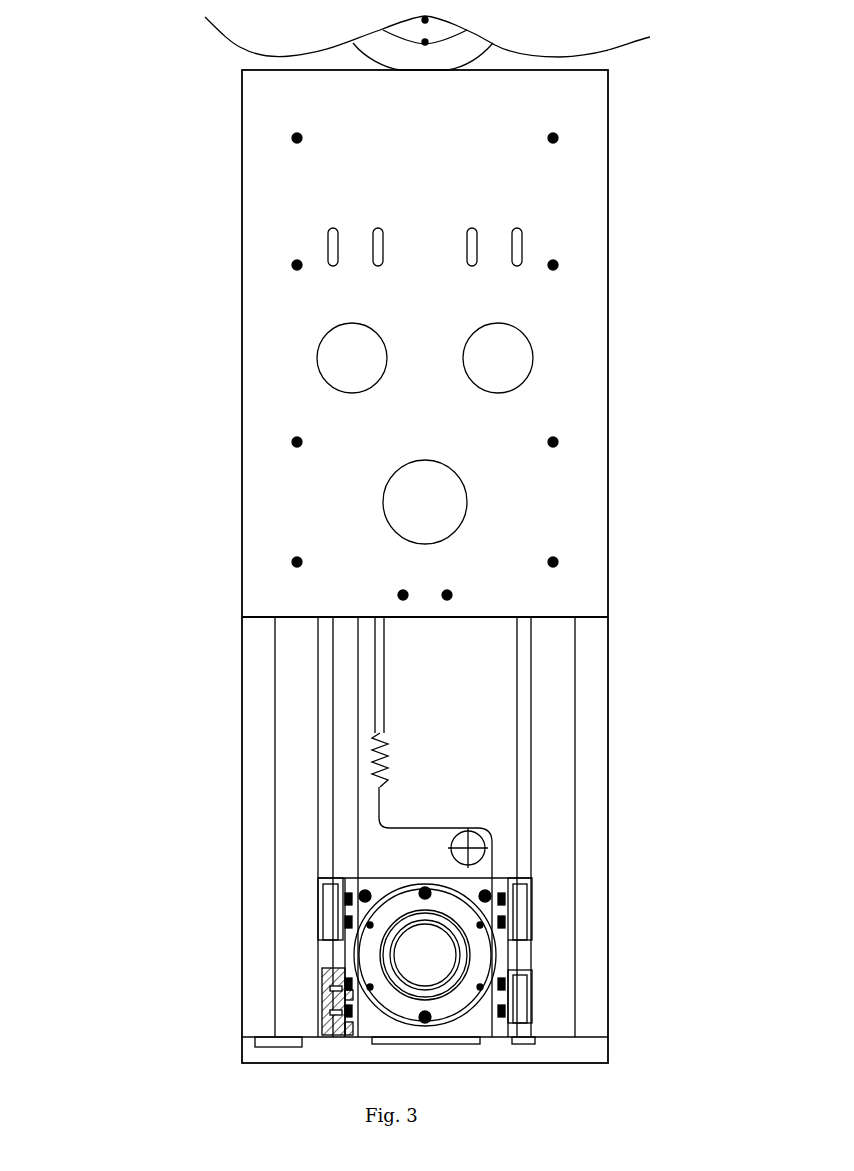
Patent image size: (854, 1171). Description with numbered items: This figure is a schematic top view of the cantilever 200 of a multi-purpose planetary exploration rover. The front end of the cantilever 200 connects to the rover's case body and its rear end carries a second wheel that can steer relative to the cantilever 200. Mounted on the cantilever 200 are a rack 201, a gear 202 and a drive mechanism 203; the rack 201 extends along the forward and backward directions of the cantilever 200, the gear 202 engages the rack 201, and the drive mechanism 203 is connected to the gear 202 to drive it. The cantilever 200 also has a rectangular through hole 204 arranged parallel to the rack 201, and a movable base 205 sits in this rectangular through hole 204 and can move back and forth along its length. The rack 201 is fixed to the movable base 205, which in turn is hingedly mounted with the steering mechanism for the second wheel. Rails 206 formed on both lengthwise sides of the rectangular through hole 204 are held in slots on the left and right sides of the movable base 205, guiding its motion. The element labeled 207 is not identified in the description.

The cantilever 200 is at (206, 262).
The rack 201 is at (395, 794).
The gear 202 is at (478, 957).
The drive mechanism 203 is at (419, 452).
The rectangular through hole 204 is at (476, 744).
The movable base 205 is at (366, 1014).
The rail 206 is at (322, 837).
The base foot 207 is at (258, 1013).